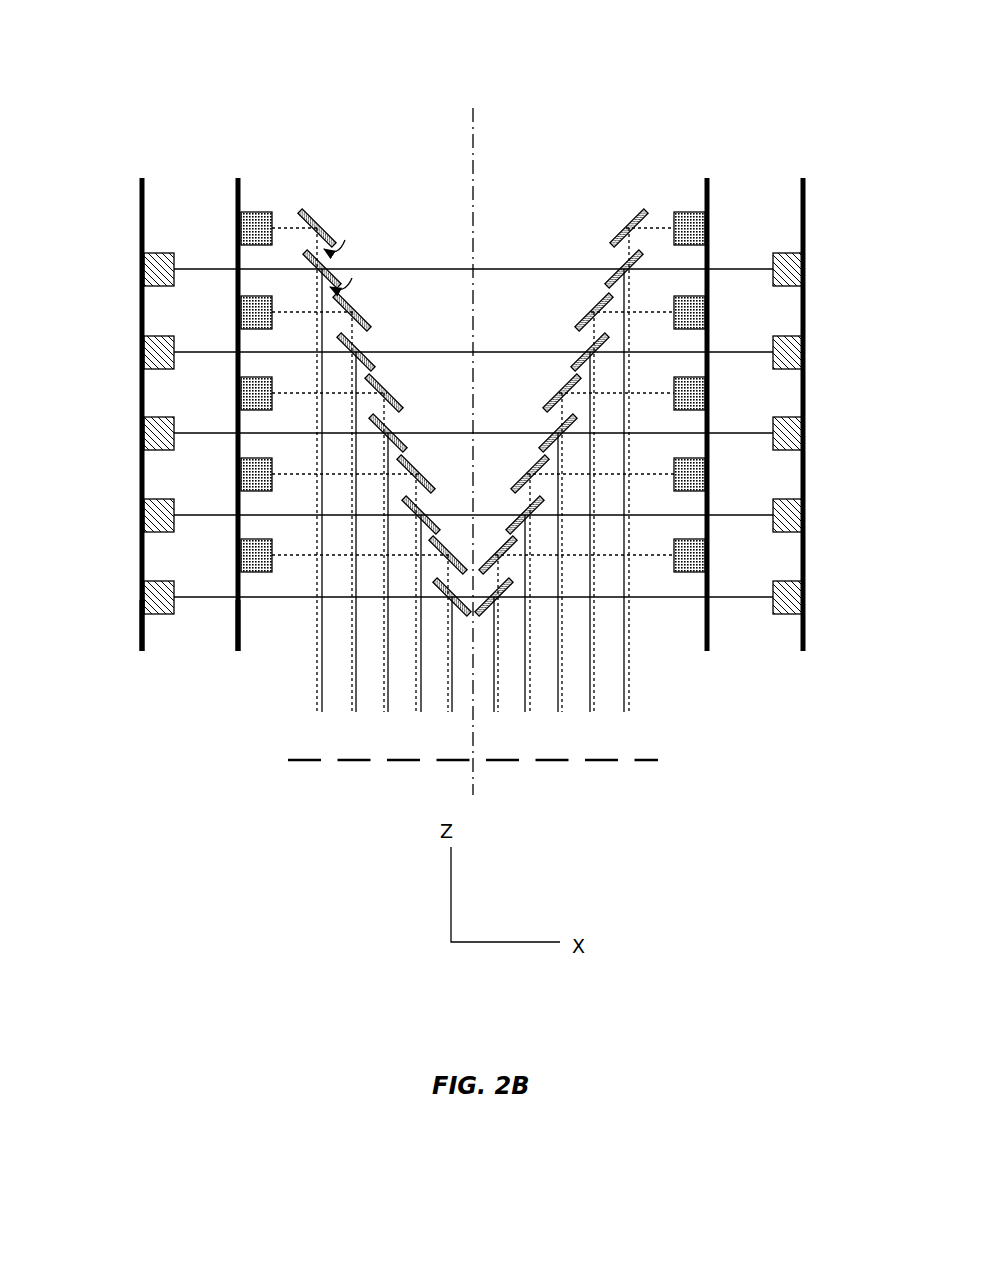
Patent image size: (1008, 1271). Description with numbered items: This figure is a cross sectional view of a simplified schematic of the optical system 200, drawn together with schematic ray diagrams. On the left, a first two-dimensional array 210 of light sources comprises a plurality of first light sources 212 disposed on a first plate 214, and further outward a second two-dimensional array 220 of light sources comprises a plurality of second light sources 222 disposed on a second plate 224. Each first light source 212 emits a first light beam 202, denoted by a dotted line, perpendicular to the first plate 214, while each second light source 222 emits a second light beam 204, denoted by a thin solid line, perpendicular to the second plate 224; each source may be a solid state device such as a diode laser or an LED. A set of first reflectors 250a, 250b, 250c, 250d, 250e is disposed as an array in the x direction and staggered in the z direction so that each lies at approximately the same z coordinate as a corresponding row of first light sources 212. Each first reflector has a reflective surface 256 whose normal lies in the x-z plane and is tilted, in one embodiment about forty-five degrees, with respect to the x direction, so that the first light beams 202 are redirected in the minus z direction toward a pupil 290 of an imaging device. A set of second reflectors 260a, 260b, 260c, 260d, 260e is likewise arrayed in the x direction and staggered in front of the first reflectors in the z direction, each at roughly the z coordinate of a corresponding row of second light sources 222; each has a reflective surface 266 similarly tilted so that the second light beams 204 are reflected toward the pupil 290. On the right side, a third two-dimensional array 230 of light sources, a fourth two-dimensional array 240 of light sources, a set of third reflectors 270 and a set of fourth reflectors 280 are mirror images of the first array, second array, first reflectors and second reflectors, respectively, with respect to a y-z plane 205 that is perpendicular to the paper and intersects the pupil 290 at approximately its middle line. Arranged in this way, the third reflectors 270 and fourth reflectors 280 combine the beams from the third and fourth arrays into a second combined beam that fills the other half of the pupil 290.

The optical system 200 is at (462, 348).
The first light beam 202 is at (473, 455).
The second light beam 204 is at (205, 268).
The y-z plane 205 is at (480, 155).
The first two-dimensional array of light sources 210 is at (225, 385).
The first light source 212 is at (269, 202).
The first plate 214 is at (238, 637).
The second two-dimensional array of light sources 220 is at (115, 382).
The second light source 222 is at (160, 253).
The second plate 224 is at (142, 637).
The third two-dimensional array of light sources 230 is at (700, 164).
The fourth two-dimensional array of light sources 240 is at (800, 156).
The first reflector 250a is at (328, 222).
The first reflector 250b is at (364, 318).
The first reflector 250c is at (393, 390).
The first reflector 250d is at (421, 474).
The first reflector 250e is at (450, 552).
The reflective surface 256 is at (359, 236).
The second reflector 260a is at (340, 278).
The second reflector 260b is at (368, 352).
The second reflector 260c is at (398, 430).
The second reflector 260d is at (424, 512).
The second reflector 260e is at (470, 610).
The reflective surface 266 is at (365, 277).
The third reflector 270 is at (626, 220).
The fourth reflector 280 is at (620, 270).
The pupil 290 is at (648, 762).